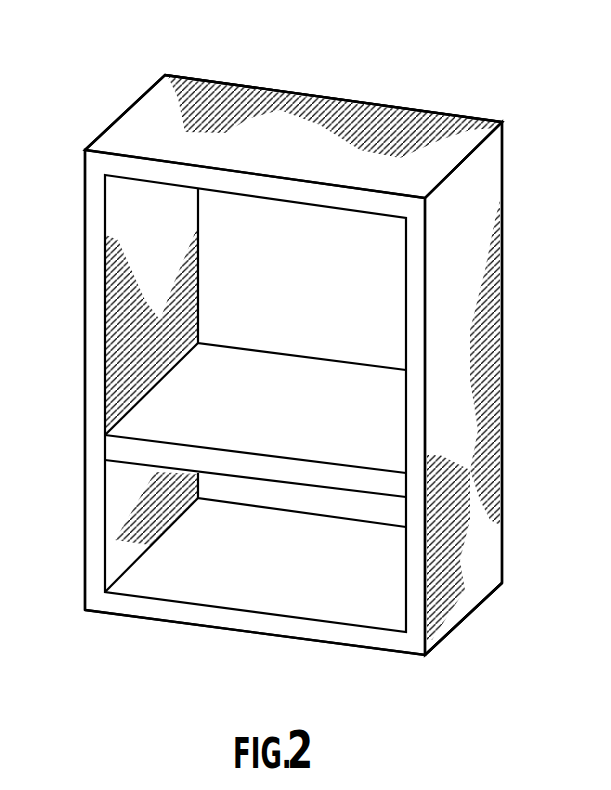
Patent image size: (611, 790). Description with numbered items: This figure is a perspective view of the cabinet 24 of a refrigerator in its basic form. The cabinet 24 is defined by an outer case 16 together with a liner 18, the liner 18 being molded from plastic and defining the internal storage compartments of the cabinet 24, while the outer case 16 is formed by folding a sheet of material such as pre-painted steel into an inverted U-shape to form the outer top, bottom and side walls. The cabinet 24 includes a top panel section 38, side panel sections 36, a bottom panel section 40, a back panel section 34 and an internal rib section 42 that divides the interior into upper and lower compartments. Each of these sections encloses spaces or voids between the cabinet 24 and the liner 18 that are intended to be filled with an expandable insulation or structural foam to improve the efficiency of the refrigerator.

The cabinet 24 is at (373, 53).
The outer case 16 is at (128, 110).
The top panel section 38 is at (230, 98).
The back panel section 34 is at (451, 114).
The side panel sections 36 is at (480, 195).
The liner 18 is at (167, 247).
The internal rib section 42 is at (189, 459).
The bottom panel section 40 is at (330, 644).